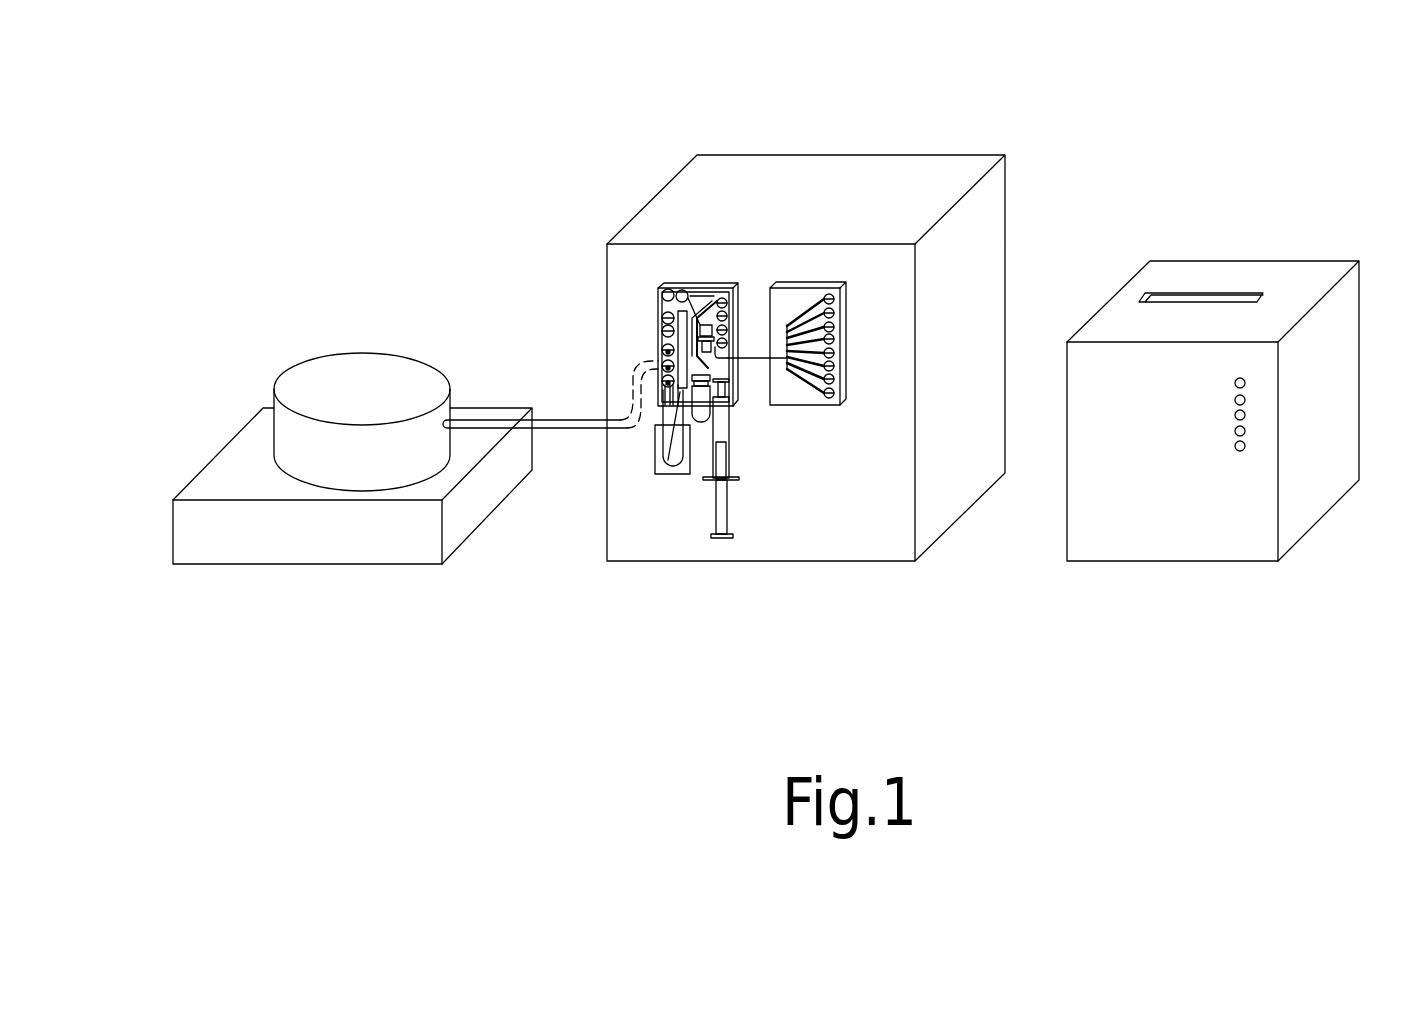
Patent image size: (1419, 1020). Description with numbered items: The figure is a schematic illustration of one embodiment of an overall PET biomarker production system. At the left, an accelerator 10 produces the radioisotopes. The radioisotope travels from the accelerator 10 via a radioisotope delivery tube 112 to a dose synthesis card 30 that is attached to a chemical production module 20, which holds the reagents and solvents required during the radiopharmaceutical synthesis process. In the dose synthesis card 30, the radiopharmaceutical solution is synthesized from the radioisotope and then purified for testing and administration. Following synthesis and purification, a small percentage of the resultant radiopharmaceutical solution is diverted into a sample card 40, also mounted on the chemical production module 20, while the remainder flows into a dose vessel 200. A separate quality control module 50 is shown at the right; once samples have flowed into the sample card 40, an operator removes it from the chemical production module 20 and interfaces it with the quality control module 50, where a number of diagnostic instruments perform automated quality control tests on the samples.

The accelerator 10 is at (318, 605).
The radioisotope delivery tube 112 is at (557, 420).
The chemical production module 20 is at (894, 125).
The dose synthesis card 30 is at (633, 288).
The sample card 40 is at (845, 400).
The dose vessel 200 is at (730, 425).
The quality control module 50 is at (1333, 232).